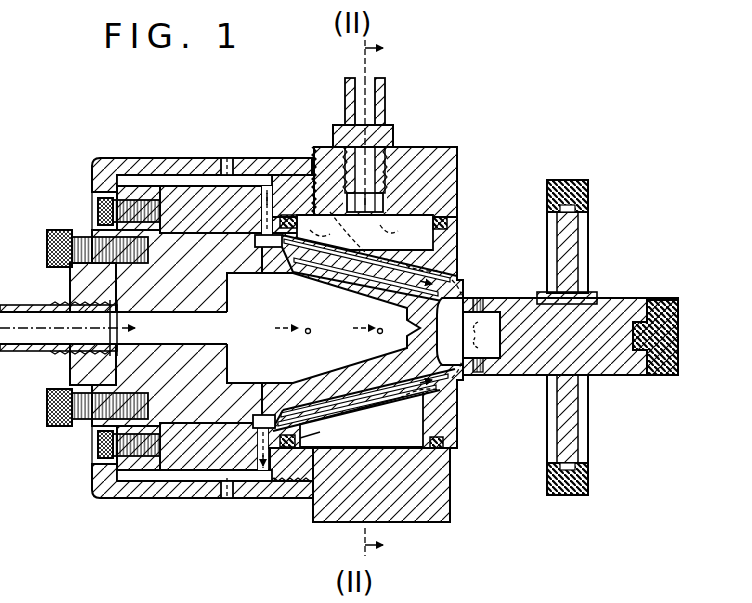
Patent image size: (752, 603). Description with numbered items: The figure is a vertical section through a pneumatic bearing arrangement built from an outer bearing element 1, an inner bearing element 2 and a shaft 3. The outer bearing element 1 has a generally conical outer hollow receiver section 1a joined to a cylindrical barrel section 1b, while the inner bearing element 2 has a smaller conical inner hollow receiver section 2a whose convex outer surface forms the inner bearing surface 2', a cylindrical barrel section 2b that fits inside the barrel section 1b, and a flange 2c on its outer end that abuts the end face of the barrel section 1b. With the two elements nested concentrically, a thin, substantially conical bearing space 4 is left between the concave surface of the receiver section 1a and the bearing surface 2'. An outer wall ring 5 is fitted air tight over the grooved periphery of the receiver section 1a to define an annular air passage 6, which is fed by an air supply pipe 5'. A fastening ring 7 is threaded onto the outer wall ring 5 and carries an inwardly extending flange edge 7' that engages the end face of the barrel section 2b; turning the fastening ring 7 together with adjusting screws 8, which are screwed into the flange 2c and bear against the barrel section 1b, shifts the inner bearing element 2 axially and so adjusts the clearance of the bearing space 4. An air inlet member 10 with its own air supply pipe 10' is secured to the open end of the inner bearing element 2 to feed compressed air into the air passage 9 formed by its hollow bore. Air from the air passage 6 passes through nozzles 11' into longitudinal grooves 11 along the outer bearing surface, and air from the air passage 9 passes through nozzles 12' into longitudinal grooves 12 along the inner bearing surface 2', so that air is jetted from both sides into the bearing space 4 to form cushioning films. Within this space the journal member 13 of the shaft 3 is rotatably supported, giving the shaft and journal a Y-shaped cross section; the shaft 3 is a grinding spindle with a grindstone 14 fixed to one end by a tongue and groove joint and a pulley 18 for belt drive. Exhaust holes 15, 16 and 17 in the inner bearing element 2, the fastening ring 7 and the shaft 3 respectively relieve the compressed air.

The outer bearing element 1 is at (457, 223).
The outer hollow receiver section 1a is at (449, 266).
The barrel section 1b is at (190, 189).
The inner bearing element 2 is at (211, 446).
The inner bearing surface 2' is at (322, 389).
The inner hollow receiver section 2a is at (452, 397).
The barrel section 2b is at (181, 240).
The flange 2c is at (133, 187).
The shaft 3 is at (616, 309).
The bearing space 4 is at (458, 296).
The outer wall ring 5 is at (395, 334).
The air supply pipe 5' is at (375, 145).
The air passage 6 is at (410, 249).
The fastening ring 7 is at (293, 305).
The flange edge 7' is at (182, 319).
The adjusting screws 8 is at (98, 212).
The air passage 9 is at (259, 337).
The air inlet member 10 is at (88, 328).
The air supply pipe 10' is at (113, 341).
The longitudinal grooves 11 is at (339, 347).
The nozzles 11' is at (395, 332).
The longitudinal grooves 12 is at (365, 333).
The nozzles 12' is at (334, 331).
The journal member 13 is at (451, 421).
The grindstone 14 is at (650, 377).
The exhaust hole 15 is at (268, 187).
The exhaust hole 16 is at (228, 162).
The exhaust hole 17 is at (486, 306).
The pulley 18 is at (577, 205).